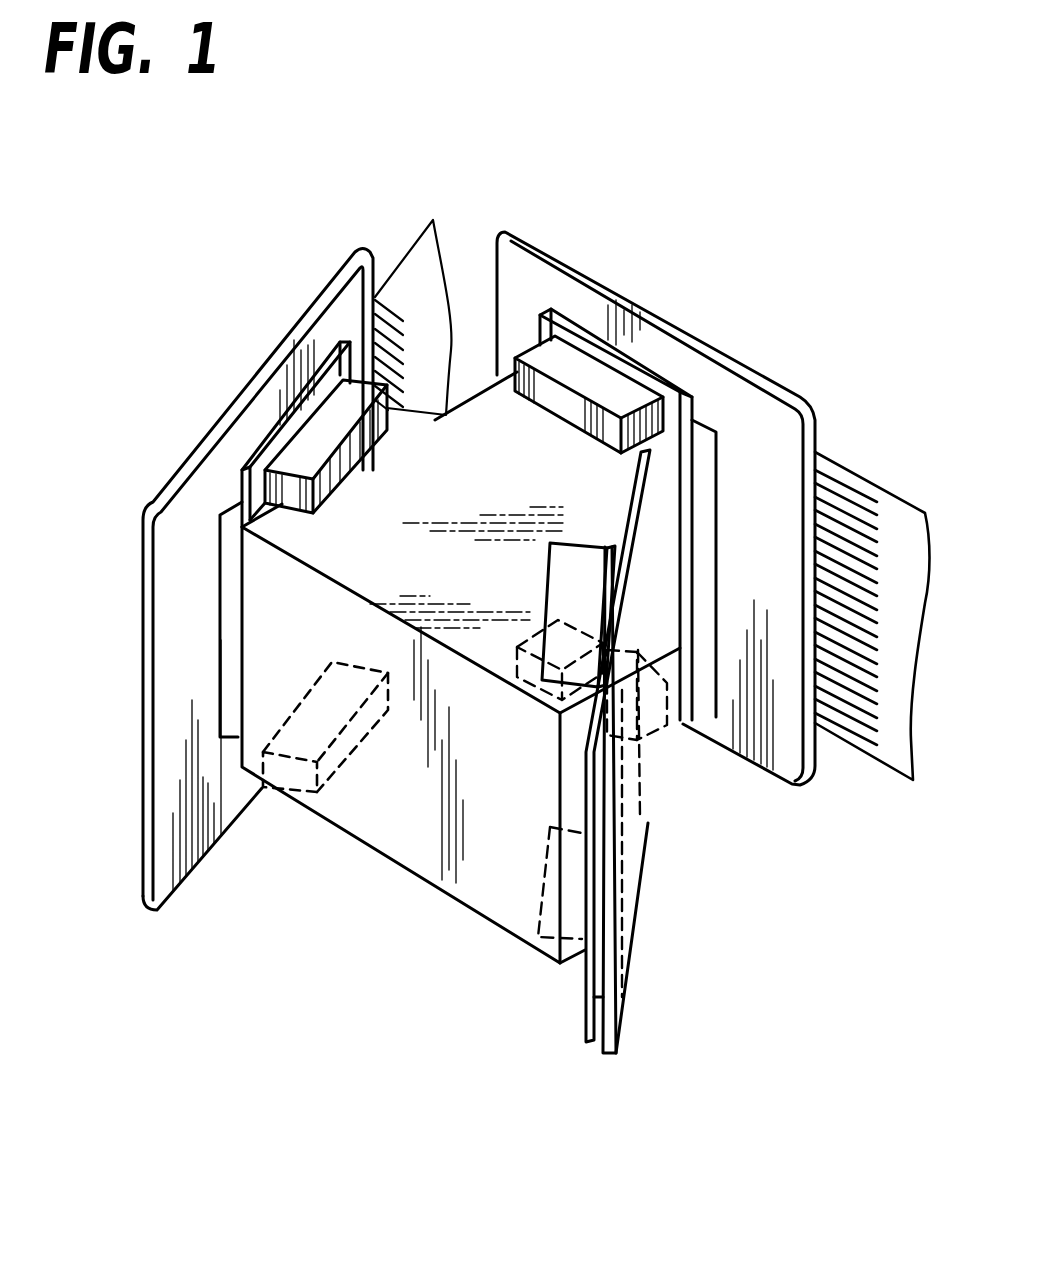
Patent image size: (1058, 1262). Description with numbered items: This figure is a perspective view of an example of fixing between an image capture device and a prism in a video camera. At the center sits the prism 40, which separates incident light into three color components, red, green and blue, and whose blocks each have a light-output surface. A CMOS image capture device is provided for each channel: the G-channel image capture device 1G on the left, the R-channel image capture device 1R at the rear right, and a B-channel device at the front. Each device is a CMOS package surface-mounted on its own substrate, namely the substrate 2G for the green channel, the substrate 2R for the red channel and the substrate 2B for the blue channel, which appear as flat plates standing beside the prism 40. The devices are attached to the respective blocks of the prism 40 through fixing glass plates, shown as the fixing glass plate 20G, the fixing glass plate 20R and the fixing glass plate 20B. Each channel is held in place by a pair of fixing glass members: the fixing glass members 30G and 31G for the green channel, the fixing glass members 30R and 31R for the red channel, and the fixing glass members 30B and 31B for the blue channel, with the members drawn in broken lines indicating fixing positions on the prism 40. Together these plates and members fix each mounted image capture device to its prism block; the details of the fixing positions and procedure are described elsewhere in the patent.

The prism 40 is at (420, 840).
The substrate 2G is at (178, 590).
The G-channel image capture device 1G is at (228, 688).
The fixing glass plate 20G is at (273, 427).
The fixing glass member 30G is at (335, 400).
The fixing glass member 31G is at (282, 790).
The substrate 2R is at (780, 430).
The R-channel image capture device 1R is at (710, 462).
The fixing glass plate 20R is at (638, 363).
The fixing glass member 30R is at (565, 358).
The fixing glass member 31R is at (648, 713).
The fixing glass member 30B is at (563, 560).
The fixing glass member 31B is at (540, 968).
The fixing glass plate 20B is at (588, 1043).
The substrate 2B is at (637, 810).